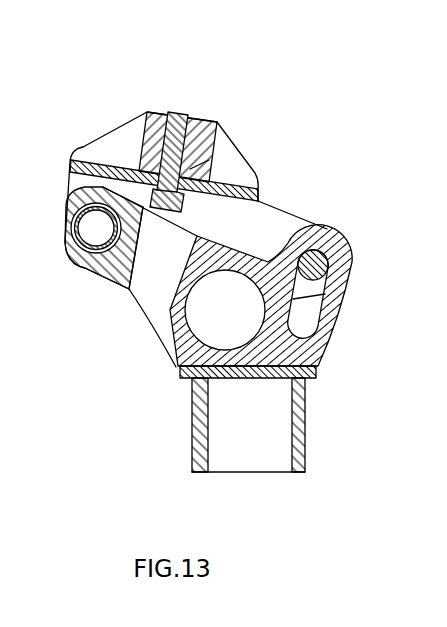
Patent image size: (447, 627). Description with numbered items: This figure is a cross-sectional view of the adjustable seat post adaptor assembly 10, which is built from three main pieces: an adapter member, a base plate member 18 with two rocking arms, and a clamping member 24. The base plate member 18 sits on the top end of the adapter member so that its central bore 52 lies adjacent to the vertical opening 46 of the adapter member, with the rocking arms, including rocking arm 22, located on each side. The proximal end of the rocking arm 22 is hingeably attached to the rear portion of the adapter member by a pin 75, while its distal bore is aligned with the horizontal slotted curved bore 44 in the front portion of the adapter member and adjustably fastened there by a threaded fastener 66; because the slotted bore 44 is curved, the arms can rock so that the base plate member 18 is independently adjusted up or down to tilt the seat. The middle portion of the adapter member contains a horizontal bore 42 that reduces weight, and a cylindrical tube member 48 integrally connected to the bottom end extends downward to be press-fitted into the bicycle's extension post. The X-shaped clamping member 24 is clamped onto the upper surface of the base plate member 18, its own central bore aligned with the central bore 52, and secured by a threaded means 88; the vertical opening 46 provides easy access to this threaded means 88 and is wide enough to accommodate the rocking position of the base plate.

The adjustable seat post adaptor assembly 10 is at (213, 243).
The base plate member 18 is at (163, 193).
The clamping member 24 is at (203, 126).
The central bore 52 is at (190, 168).
The rocking arm 22 is at (250, 316).
The threaded fastener 66 is at (318, 244).
The horizontal slotted curved bore 44 is at (320, 328).
The cylindrical tube member 48 is at (296, 410).
The horizontal bore 42 is at (190, 341).
The vertical opening 46 is at (131, 289).
The pin 75 is at (80, 250).
The threaded means 88 is at (181, 119).